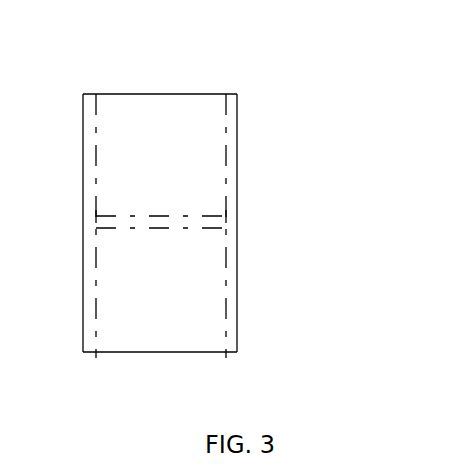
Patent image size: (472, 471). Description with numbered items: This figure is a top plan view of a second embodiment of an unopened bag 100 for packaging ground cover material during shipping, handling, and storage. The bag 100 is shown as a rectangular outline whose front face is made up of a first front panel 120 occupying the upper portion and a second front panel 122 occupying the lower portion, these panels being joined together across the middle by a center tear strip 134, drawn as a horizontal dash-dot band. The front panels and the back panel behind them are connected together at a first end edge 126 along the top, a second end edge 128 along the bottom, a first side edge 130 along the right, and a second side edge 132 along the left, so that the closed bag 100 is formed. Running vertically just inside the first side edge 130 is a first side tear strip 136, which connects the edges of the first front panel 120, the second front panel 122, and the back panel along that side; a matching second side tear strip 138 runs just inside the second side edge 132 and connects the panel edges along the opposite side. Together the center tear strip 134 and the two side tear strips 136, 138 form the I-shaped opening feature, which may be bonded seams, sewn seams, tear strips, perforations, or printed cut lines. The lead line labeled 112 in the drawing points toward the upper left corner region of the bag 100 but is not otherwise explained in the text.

The bag 100 is at (275, 86).
The top wall 112 is at (107, 93).
The first front panel 120 is at (146, 123).
The second front panel 122 is at (136, 311).
The first end edge 126 is at (193, 93).
The second end edge 128 is at (175, 353).
The first side edge 130 is at (238, 165).
The second side edge 132 is at (83, 235).
The center tear strip 134 is at (155, 222).
The first side tear strip 136 is at (238, 294).
The second side tear strip 138 is at (92, 306).